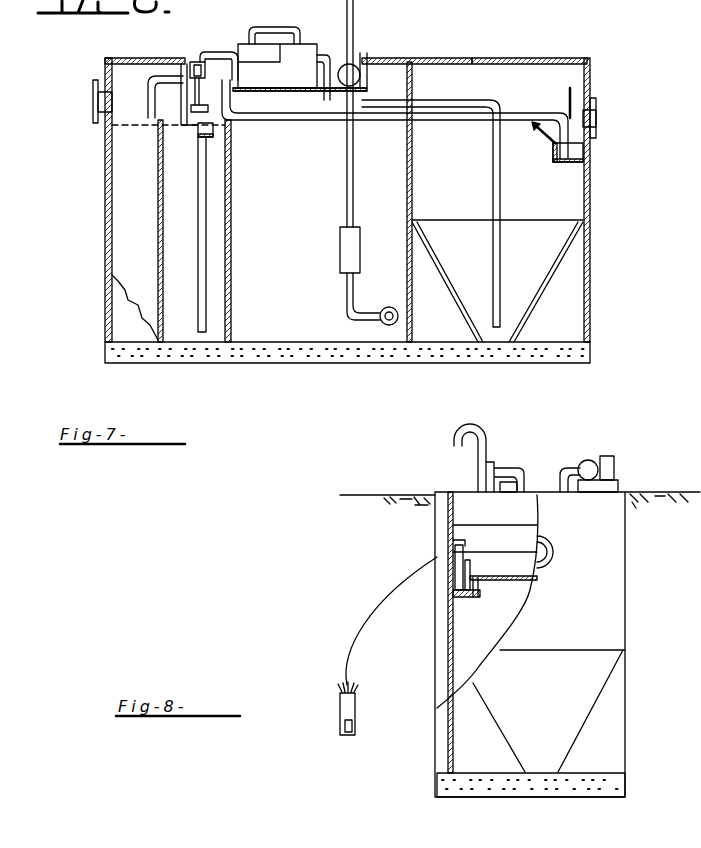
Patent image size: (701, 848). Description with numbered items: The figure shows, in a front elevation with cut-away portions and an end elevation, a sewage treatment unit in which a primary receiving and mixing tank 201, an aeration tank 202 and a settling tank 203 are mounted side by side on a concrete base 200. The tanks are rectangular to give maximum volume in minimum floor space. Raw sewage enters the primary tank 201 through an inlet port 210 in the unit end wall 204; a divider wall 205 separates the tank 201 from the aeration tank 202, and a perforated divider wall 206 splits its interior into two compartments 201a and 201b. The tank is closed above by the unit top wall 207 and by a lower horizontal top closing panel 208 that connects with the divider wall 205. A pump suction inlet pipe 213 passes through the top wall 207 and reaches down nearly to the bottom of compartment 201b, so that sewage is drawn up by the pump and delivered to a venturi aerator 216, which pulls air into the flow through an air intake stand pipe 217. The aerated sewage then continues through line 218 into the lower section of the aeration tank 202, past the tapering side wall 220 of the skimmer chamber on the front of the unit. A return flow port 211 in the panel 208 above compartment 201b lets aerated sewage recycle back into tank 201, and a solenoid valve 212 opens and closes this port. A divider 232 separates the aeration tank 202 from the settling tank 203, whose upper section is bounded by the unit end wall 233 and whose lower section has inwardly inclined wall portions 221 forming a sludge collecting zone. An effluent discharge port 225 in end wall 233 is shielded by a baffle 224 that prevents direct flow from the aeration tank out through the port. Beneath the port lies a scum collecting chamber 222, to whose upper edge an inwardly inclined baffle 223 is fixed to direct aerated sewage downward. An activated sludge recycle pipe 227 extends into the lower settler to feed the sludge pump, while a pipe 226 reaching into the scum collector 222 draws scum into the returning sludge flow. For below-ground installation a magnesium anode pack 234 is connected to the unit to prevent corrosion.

In FIG. 7, the concrete base 200 is at (350, 360).
In FIG. 7, the primary receiving and mixing tank 201 is at (163, 58).
In FIG. 7, the compartment 201a is at (144, 238).
In FIG. 7, the compartment 201b is at (192, 260).
In FIG. 7, the aeration tank 202 is at (398, 58).
In FIG. 7, the settling tank 203 is at (543, 58).
In FIG. 7, the unit end wall 204 is at (107, 262).
In FIG. 7, the divider wall 205 is at (232, 290).
In FIG. 7, the perforated divider wall 206 is at (158, 168).
In FIG. 7, the unit top wall 207 is at (136, 57).
In FIG. 7, the top closing panel 208 is at (255, 121).
In FIG. 7, the inlet port 210 is at (93, 100).
In FIG. 7, the return flow port 211 is at (214, 137).
In FIG. 7, the solenoid valve 212 is at (210, 108).
In FIG. 7, the pump suction inlet pipe 213 is at (215, 47).
In FIG. 7, the venturi aerator 216 is at (340, 247).
In FIG. 8, the venturi aerator 216 is at (478, 440).
In FIG. 7, the air intake stand pipe 217 is at (356, 26).
In FIG. 7, the aerated sewage inlet line 218 is at (390, 307).
In FIG. 8, the aerated sewage inlet line 218 is at (445, 492).
In FIG. 7, the tapering side wall 220 is at (290, 88).
In FIG. 7, the inwardly inclined wall portions 221 is at (544, 291).
In FIG. 8, the inwardly inclined wall portions 221 is at (575, 711).
In FIG. 7, the scum collecting chamber 222 is at (576, 165).
In FIG. 8, the scum collecting chamber 222 is at (455, 603).
In FIG. 7, the inwardly inclined baffle 223 is at (528, 140).
In FIG. 7, the baffle 224 is at (566, 98).
In FIG. 8, the baffle 224 is at (478, 533).
In FIG. 7, the effluent discharge port 225 is at (597, 116).
In FIG. 8, the effluent discharge port 225 is at (556, 551).
In FIG. 7, the pipe 226 is at (470, 121).
In FIG. 8, the pipe 226 is at (455, 540).
In FIG. 7, the activated sludge recycle pipe 227 is at (500, 193).
In FIG. 7, the divider wall 232 is at (413, 195).
In FIG. 7, the unit end wall 233 is at (587, 207).
In FIG. 8, the unit end wall 233 is at (611, 617).
In FIG. 8, the magnesium anode pack 234 is at (353, 722).